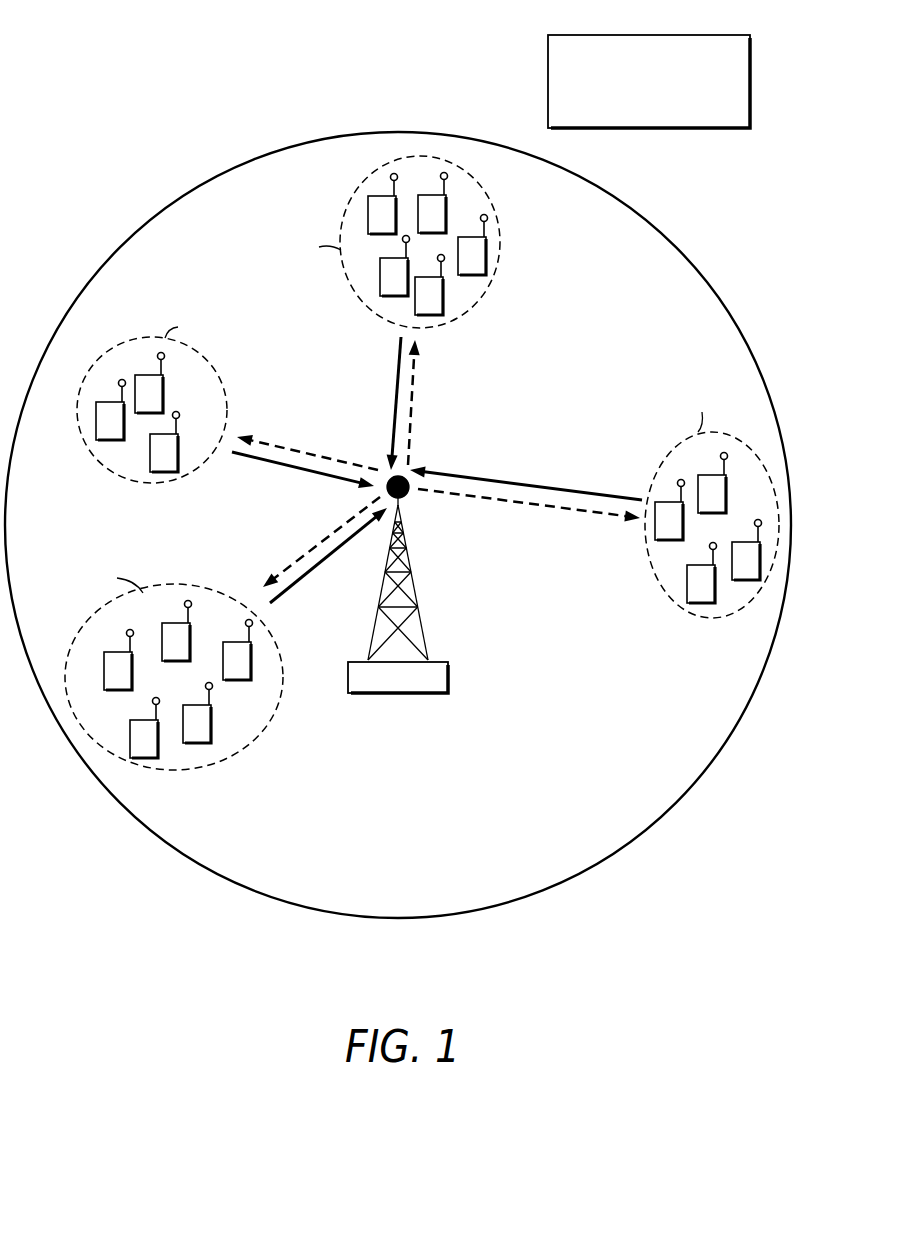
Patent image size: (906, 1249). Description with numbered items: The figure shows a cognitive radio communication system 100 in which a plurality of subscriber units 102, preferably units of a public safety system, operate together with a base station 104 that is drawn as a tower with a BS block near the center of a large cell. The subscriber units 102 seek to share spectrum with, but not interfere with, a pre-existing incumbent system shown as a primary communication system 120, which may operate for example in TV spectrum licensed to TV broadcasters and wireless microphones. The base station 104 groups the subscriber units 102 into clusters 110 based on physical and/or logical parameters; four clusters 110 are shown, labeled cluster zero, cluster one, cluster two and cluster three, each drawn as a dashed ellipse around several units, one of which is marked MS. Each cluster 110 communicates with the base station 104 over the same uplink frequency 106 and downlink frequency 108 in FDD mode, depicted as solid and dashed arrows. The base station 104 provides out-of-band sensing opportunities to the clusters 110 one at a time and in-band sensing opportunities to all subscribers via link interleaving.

The communication system 100 is at (107, 86).
The subscriber unit 102 is at (487, 250).
The base station 104 is at (347, 678).
The uplink frequency 106 is at (399, 375).
The downlink frequency 108 is at (416, 378).
The cluster 110 is at (157, 770).
The primary communication system 120 is at (748, 36).